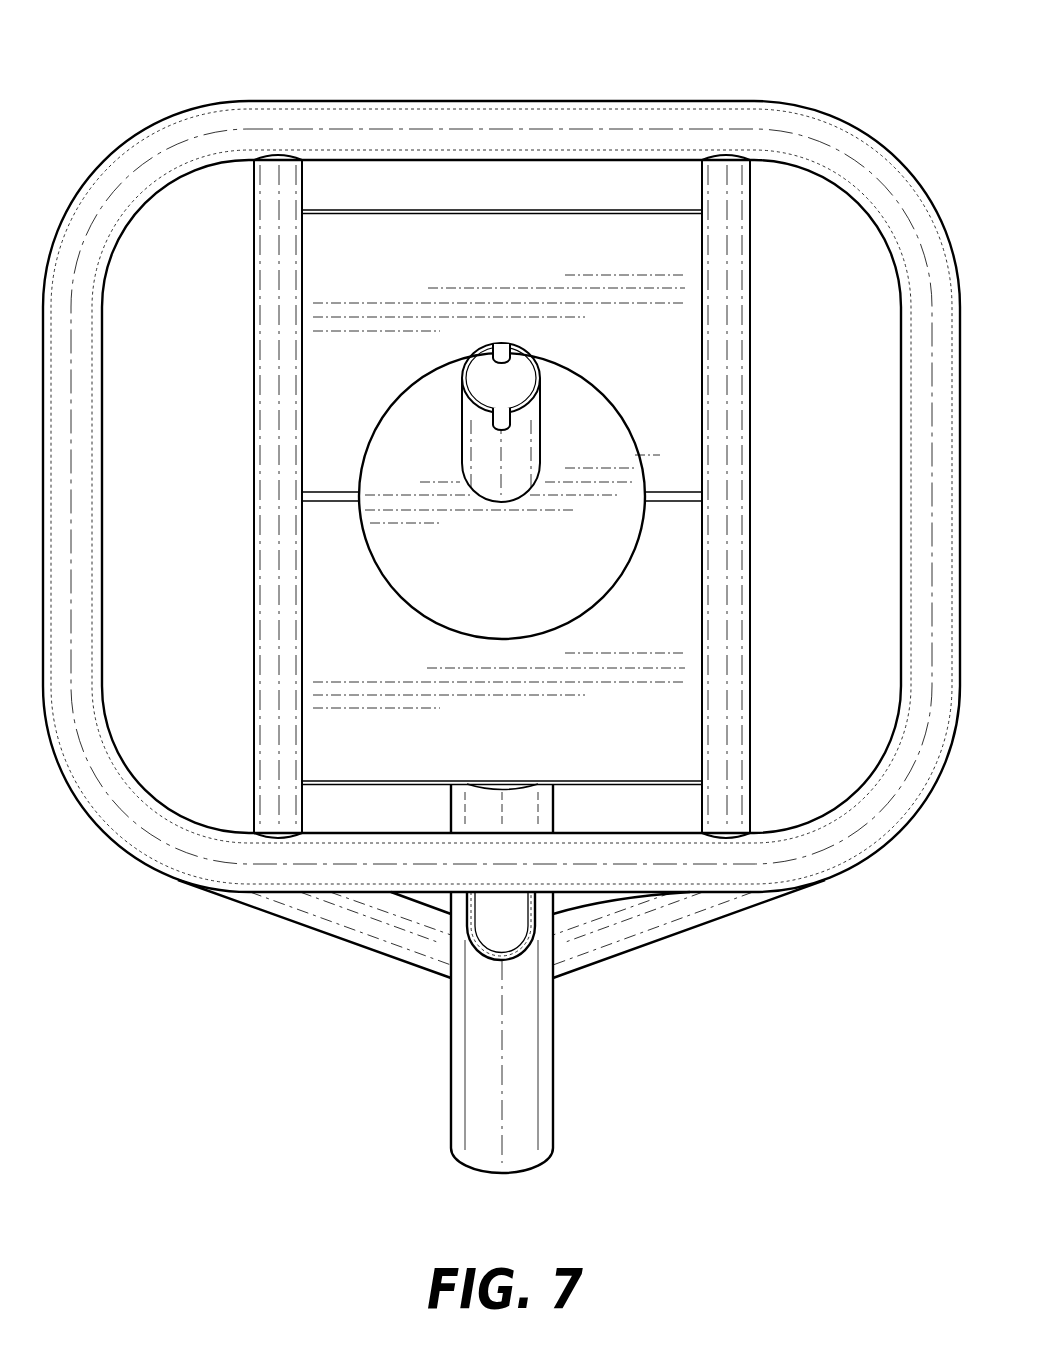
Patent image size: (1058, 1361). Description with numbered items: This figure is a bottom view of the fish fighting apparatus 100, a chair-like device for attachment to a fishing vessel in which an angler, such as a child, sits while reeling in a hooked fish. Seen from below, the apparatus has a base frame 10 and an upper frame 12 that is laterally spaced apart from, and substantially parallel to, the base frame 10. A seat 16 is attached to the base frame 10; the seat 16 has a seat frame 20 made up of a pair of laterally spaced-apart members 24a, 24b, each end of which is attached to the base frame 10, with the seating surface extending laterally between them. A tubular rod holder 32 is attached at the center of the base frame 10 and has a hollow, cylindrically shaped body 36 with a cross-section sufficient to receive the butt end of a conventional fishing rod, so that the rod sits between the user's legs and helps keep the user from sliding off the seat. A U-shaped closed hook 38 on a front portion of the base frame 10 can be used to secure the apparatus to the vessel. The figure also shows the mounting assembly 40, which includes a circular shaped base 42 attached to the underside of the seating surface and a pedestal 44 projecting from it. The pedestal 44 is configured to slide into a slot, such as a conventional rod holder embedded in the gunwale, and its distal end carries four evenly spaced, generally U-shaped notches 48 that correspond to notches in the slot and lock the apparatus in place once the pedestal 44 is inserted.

The fish fighting apparatus 100 is at (109, 85).
The base frame 10 is at (206, 129).
The upper frame 12 is at (653, 928).
The seat 16 is at (518, 188).
The seat frame 20 is at (735, 152).
The member 24a is at (739, 321).
The member 24b is at (267, 333).
The rod holder 32 is at (545, 1073).
The cylindrically shaped body 36 is at (490, 1030).
The closed hook 38 is at (472, 927).
The mounting assembly 40 is at (646, 537).
The base 42 is at (645, 455).
The pedestal 44 is at (483, 350).
The notches 48 is at (538, 352).